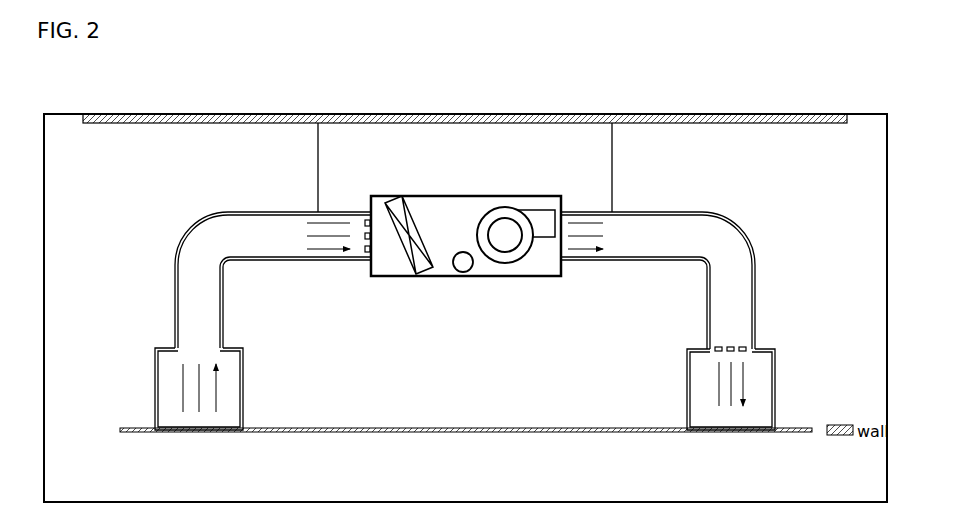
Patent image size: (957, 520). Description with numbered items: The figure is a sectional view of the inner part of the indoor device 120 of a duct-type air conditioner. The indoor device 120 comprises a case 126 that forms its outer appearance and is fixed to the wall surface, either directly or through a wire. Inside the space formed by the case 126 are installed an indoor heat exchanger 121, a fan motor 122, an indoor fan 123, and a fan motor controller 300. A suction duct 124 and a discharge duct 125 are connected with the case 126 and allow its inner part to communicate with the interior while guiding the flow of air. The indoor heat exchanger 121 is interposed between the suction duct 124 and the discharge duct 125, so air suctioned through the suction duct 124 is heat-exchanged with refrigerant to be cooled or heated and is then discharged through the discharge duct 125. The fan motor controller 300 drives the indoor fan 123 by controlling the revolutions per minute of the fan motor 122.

The indoor device 120 is at (790, 213).
The indoor heat exchanger 121 is at (407, 248).
The fan motor 122 is at (504, 210).
The indoor fan 123 is at (479, 220).
The suction duct 124 is at (192, 312).
The discharge duct 125 is at (738, 300).
The case 126 is at (562, 197).
The fan motor controller 300 is at (463, 272).